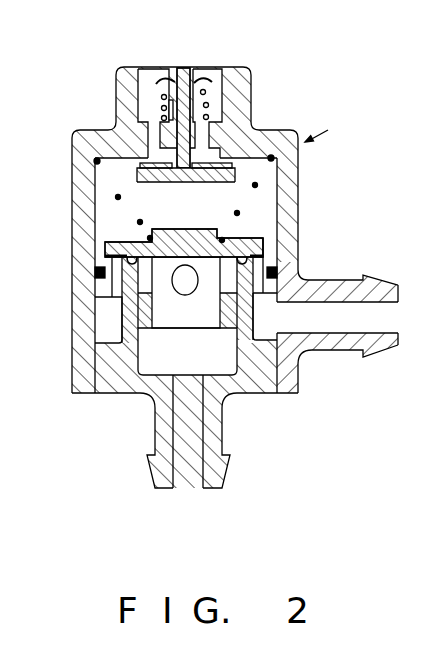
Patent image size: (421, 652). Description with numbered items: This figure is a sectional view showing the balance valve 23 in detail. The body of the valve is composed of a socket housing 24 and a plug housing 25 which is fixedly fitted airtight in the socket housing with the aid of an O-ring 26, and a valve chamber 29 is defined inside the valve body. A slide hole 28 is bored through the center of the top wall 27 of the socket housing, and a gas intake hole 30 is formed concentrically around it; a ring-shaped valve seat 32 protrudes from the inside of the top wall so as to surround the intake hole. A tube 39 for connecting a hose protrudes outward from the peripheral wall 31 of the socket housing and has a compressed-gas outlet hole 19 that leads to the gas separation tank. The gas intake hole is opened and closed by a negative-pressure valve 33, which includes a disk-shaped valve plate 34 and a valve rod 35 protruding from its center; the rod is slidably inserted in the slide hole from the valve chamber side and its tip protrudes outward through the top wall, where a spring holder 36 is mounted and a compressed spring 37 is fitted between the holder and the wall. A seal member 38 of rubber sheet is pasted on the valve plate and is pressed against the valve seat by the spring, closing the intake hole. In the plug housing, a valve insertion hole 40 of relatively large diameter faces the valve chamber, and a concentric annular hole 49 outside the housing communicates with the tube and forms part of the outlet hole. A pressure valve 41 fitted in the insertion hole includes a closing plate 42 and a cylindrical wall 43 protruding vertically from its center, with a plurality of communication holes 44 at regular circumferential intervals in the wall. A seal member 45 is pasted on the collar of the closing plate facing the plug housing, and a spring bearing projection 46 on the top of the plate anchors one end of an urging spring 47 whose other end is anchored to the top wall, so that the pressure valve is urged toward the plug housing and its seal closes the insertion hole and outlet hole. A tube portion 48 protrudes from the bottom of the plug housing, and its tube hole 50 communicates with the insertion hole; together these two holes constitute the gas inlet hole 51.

The compressed-gas outlet hole 19 is at (357, 328).
The balance valve 23 is at (331, 128).
The socket housing 24 is at (288, 215).
The plug housing 25 is at (107, 397).
The O-ring 26 is at (100, 272).
The top wall 27 is at (255, 128).
The slide hole 28 is at (226, 105).
The valve chamber 29 is at (103, 203).
The gas intake hole 30 is at (155, 120).
The peripheral wall 31 is at (290, 252).
The valve seat 32 is at (135, 175).
The negative-pressure valve 33 is at (209, 212).
The valve plate 34 is at (158, 183).
The valve rod 35 is at (185, 68).
The spring holder 36 is at (205, 72).
The compressed spring 37 is at (162, 94).
The seal member 38 is at (262, 160).
The tube 39 is at (318, 350).
The valve insertion hole 40 is at (147, 346).
The pressure valve 41 is at (188, 186).
The closing plate 42 is at (255, 240).
The cylindrical wall 43 is at (148, 320).
The communication holes 44 is at (198, 280).
The seal member 45 is at (112, 262).
The spring bearing projection 46 is at (150, 231).
The urging spring 47 is at (258, 187).
The tube portion 48 is at (213, 418).
The annular hole 49 is at (115, 288).
The tube hole 50 is at (188, 455).
The gas inlet hole 51 is at (177, 407).